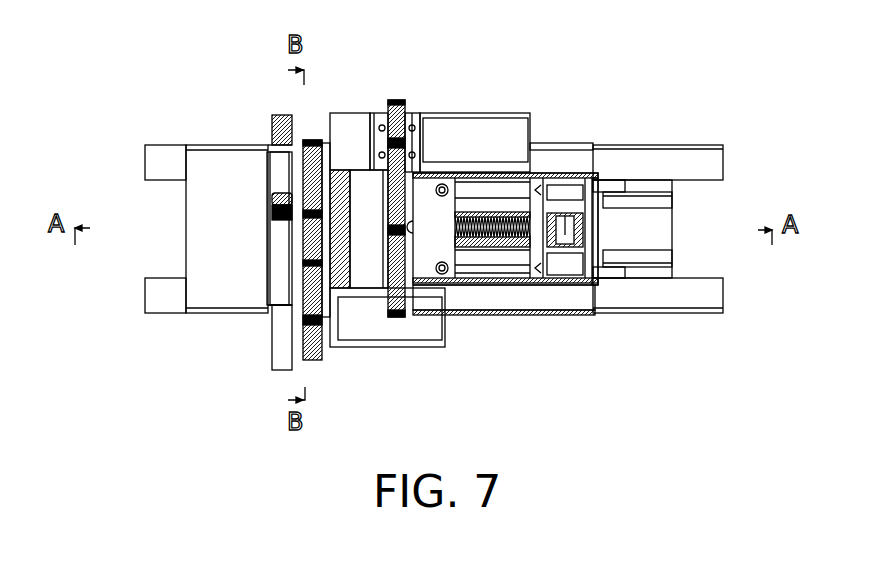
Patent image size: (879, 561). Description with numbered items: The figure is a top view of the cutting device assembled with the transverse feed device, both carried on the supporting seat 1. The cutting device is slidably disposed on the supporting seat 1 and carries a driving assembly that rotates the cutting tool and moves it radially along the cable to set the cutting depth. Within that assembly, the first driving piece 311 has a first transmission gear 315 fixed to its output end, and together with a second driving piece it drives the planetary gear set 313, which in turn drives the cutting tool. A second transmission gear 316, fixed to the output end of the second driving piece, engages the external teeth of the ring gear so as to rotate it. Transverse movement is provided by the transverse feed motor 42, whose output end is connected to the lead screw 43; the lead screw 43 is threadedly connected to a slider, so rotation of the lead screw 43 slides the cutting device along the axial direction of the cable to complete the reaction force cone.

The supporting seat 1 is at (223, 157).
The first driving piece 311 is at (483, 137).
The planetary gear set 313 is at (357, 197).
The first transmission gear 315 is at (393, 100).
The second transmission gear 316 is at (322, 358).
The transverse feed motor 42 is at (635, 233).
The lead screw 43 is at (497, 250).